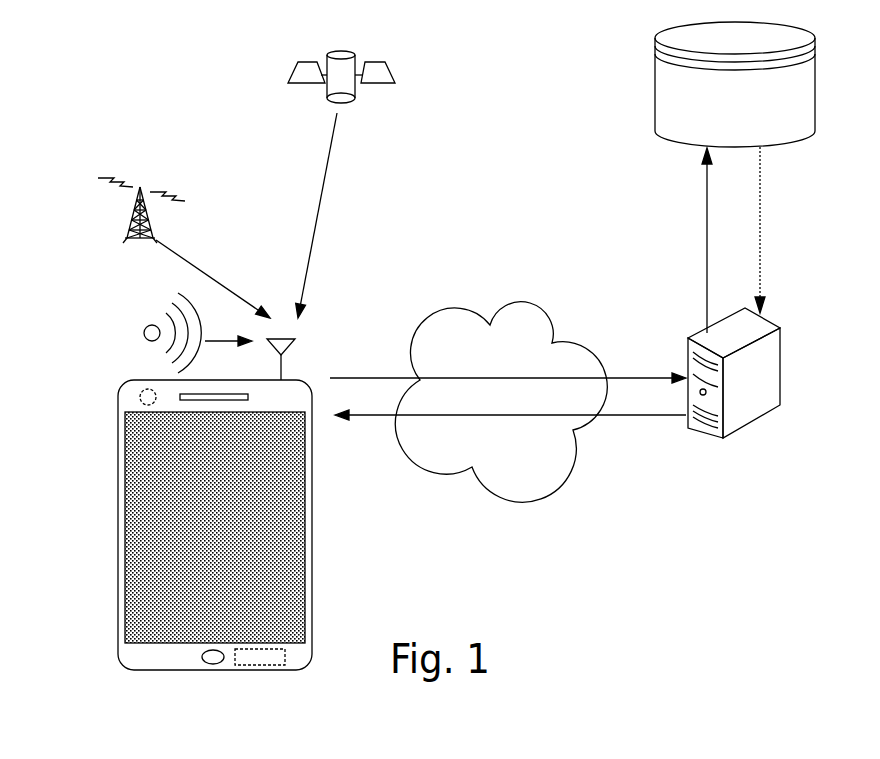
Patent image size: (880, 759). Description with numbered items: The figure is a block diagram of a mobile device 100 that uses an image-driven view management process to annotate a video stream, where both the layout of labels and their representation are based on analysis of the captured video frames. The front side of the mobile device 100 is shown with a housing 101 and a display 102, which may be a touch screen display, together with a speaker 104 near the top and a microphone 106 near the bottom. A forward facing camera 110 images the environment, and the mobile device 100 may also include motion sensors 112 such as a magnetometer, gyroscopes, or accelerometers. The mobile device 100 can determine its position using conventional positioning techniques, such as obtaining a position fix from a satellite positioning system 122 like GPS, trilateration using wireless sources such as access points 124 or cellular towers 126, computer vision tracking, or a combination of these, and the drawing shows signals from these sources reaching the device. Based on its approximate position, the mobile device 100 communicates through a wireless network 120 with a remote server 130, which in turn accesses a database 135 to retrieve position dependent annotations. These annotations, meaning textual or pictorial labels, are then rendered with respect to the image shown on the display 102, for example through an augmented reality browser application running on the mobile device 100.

The mobile device 100 is at (101, 351).
The housing 101 is at (118, 552).
The display 102 is at (305, 552).
The speaker 104 is at (248, 397).
The microphone 106 is at (208, 664).
The forward facing camera 110 is at (138, 402).
The motion sensors 112 is at (262, 665).
The wireless network 120 is at (545, 318).
The satellite positioning system 122 is at (385, 66).
The access points 124 is at (144, 332).
The cellular towers 126 is at (141, 187).
The remote server 130 is at (780, 328).
The database 135 is at (655, 85).